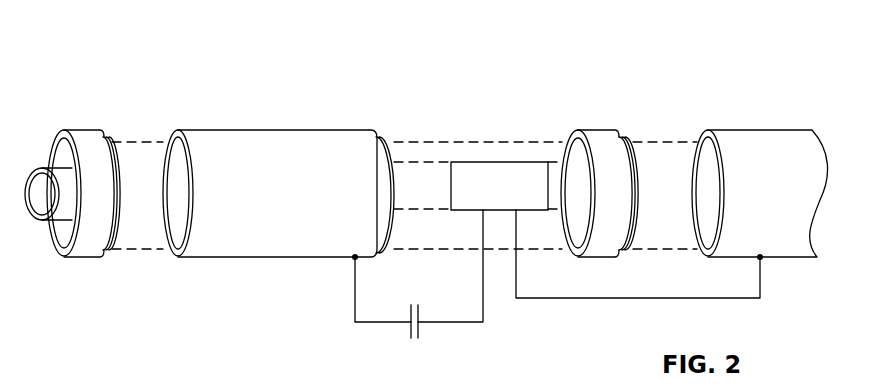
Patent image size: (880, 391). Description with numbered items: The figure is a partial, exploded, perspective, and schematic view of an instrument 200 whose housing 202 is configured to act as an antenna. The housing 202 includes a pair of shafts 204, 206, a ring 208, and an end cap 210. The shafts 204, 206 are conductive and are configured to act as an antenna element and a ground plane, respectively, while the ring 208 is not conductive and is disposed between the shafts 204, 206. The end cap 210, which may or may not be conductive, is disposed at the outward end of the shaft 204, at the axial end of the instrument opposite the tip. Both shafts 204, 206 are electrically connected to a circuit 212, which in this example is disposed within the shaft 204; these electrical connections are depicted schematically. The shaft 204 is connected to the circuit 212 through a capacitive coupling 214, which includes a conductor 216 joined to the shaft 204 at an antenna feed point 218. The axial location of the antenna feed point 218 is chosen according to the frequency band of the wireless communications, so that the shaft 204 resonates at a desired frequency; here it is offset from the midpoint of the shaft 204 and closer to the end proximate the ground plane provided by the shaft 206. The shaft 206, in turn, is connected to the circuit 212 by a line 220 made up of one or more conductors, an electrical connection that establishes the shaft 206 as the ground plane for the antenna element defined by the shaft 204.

The instrument 200 is at (114, 55).
The housing 202 is at (645, 42).
The shaft 204 is at (248, 130).
The shaft 206 is at (752, 131).
The ring 208 is at (590, 130).
The end cap 210 is at (83, 130).
The circuit 212 is at (503, 162).
The capacitive coupling 214 is at (419, 331).
The conductor 216 is at (375, 323).
The antenna feed point 218 is at (354, 259).
The line 220 is at (598, 299).